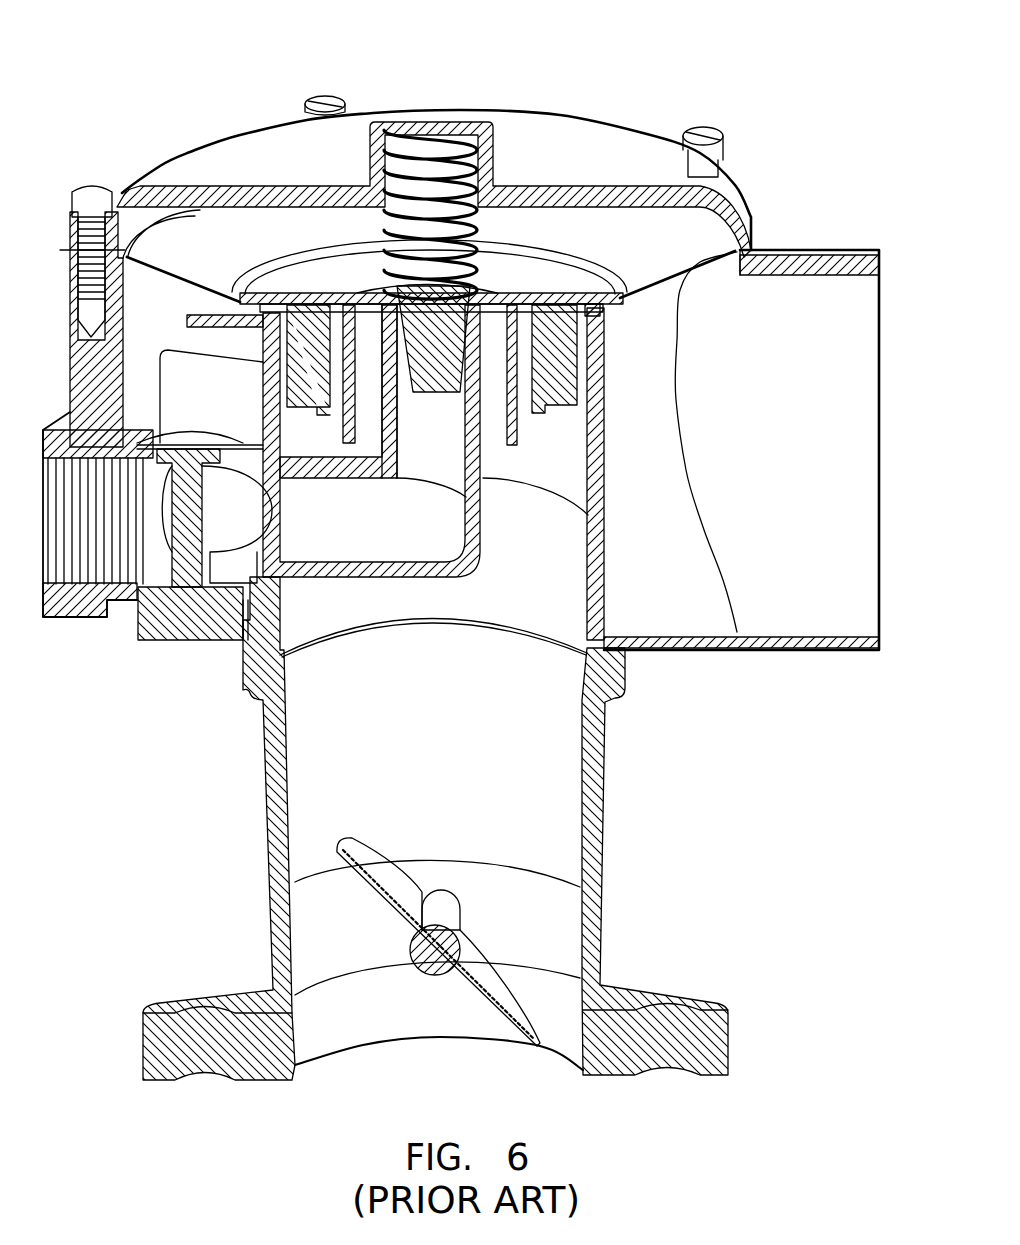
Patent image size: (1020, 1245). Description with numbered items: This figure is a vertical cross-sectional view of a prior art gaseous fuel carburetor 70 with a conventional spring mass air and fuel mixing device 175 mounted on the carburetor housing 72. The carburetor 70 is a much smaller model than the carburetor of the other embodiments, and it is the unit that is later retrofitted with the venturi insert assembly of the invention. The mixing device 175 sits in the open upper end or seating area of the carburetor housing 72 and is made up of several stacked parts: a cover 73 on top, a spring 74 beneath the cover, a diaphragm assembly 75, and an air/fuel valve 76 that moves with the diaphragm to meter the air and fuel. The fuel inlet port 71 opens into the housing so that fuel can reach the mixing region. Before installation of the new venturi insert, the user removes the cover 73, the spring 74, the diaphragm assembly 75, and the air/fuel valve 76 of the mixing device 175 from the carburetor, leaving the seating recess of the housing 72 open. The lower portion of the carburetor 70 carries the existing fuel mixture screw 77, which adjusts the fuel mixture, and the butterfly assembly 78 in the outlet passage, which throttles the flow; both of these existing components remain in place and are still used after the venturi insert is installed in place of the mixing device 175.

The carburetor 70 is at (640, 675).
The fuel inlet port 71 is at (396, 446).
The carburetor housing 72 is at (767, 650).
The cover 73 is at (560, 117).
The spring 74 is at (428, 150).
The diaphragm assembly 75 is at (687, 290).
The air/fuel valve 76 is at (596, 432).
The fuel mixture screw 77 is at (190, 650).
The butterfly assembly 78 is at (258, 840).
The spring mass air and fuel mixing device 175 is at (594, 238).